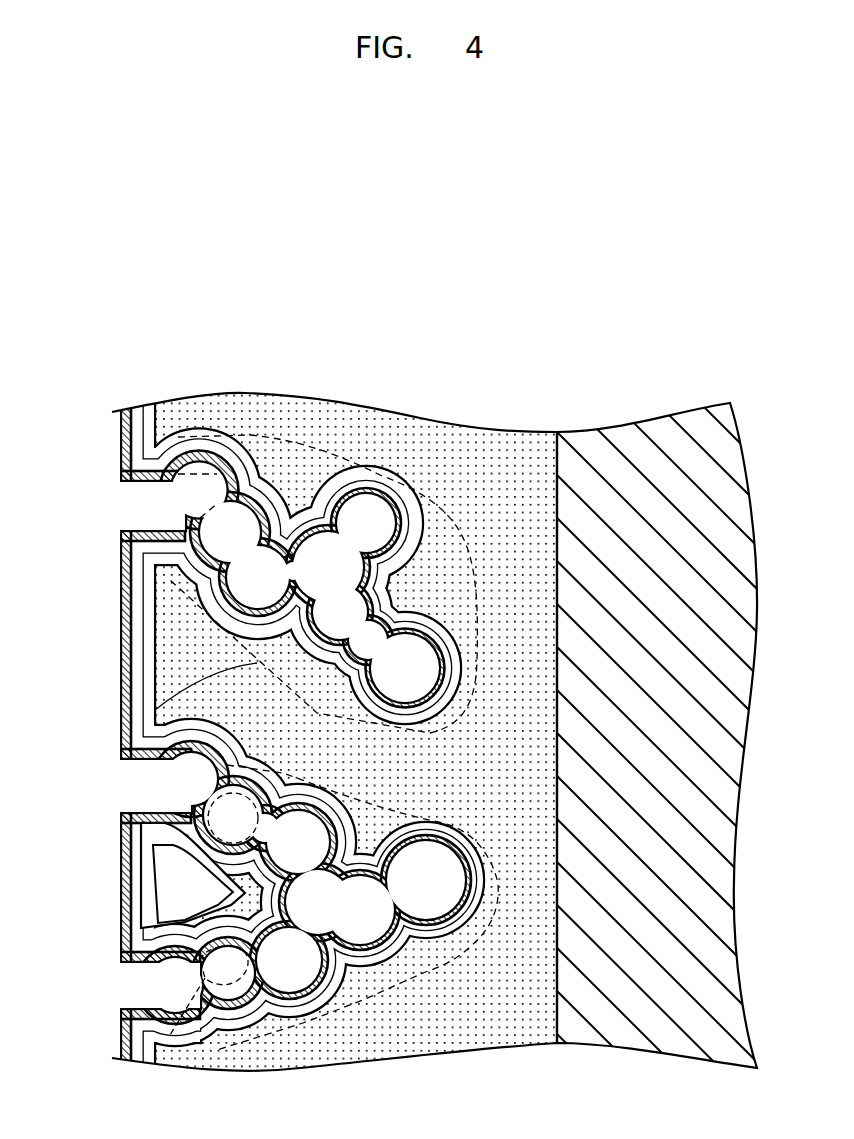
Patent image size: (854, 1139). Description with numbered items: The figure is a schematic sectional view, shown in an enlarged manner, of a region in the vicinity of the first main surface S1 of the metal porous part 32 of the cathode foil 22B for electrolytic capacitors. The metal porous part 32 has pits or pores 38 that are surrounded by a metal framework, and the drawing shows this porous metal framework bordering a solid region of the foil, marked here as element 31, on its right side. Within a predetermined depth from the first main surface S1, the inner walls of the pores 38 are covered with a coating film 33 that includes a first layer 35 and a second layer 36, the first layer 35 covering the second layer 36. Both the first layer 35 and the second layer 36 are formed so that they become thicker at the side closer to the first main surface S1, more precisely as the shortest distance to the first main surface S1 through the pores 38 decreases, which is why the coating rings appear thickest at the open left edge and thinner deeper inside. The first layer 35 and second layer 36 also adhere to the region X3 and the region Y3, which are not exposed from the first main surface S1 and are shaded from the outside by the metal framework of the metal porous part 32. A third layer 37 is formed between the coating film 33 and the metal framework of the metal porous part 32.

The cathode foil 22B is at (578, 300).
The current collector 31 is at (638, 447).
The metal porous part 32 is at (360, 432).
The coating film 33 is at (238, 740).
The first layer 35 is at (120, 572).
The second layer 36 is at (155, 545).
The third layer 37 is at (150, 662).
The pores 38 is at (158, 787).
The first main surface S1 is at (121, 914).
The region X3 is at (155, 710).
The region Y3 is at (218, 956).